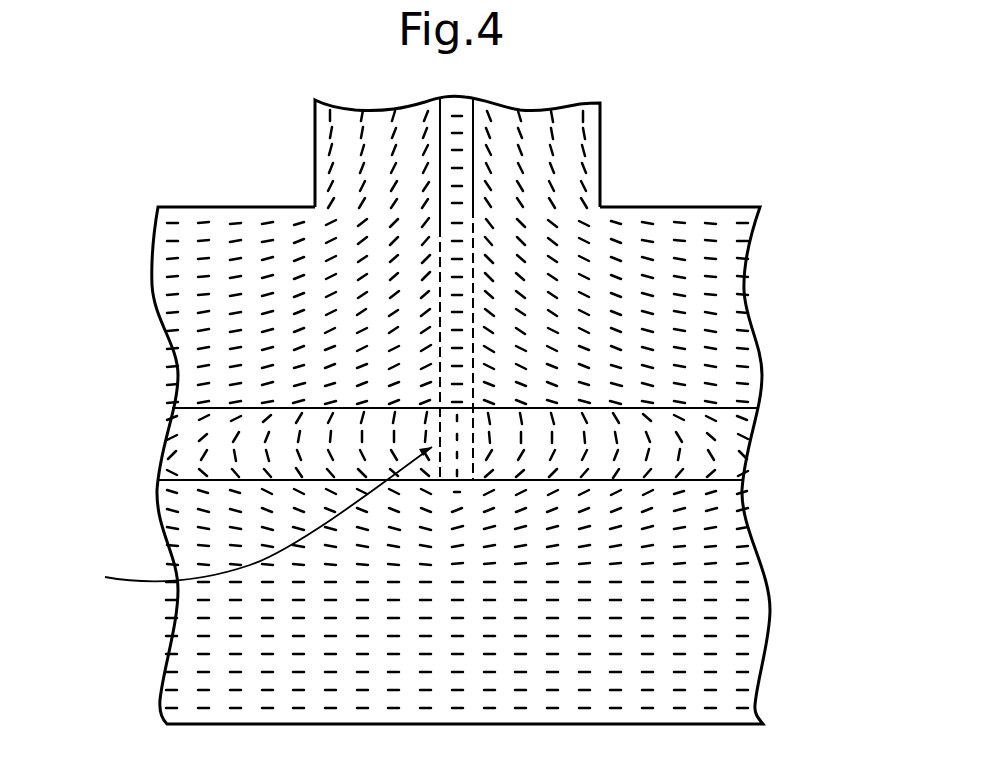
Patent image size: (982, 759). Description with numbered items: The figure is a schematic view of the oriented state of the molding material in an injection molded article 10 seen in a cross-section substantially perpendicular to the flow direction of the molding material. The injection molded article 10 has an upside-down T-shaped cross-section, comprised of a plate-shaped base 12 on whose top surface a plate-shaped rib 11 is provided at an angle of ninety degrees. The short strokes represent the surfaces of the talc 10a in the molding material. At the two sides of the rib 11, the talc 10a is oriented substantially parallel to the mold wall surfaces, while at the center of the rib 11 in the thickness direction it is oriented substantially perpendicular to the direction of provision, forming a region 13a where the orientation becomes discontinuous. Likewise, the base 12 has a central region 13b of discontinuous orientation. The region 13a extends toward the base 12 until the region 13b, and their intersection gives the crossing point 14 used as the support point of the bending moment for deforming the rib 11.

The injection molded article 10 is at (122, 291).
The talc 10a is at (363, 163).
The rib 11 is at (602, 122).
The base 12 is at (718, 207).
The region 13a is at (473, 143).
The region 13b is at (725, 408).
The crossing point 14 is at (253, 518).